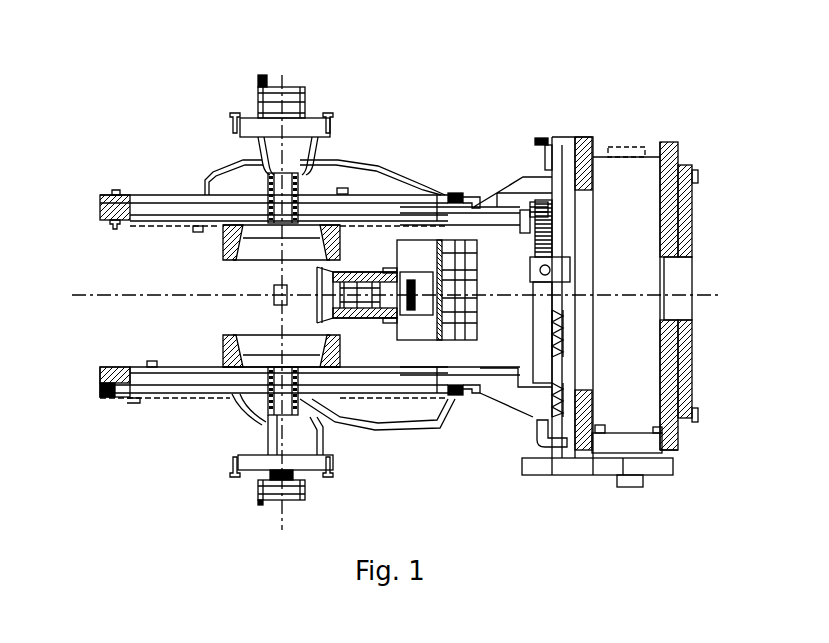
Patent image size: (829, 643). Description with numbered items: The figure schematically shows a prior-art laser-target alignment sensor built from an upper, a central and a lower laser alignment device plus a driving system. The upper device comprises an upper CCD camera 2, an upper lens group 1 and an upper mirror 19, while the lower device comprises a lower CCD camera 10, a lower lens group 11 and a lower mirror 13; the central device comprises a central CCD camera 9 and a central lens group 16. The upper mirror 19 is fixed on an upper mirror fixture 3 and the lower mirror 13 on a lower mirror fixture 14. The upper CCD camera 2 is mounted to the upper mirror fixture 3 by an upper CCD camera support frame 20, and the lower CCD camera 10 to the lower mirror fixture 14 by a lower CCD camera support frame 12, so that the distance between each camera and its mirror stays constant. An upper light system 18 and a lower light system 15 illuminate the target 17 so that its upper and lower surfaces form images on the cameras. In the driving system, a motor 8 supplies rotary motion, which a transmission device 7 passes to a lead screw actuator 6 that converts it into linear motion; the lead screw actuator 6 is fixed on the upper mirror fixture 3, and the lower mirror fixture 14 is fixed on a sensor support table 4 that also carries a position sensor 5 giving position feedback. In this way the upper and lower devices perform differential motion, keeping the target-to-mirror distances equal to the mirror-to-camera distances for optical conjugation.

The upper lens group 1 is at (207, 173).
The upper CCD camera 2 is at (258, 95).
The upper mirror fixture 3 is at (452, 195).
The sensor support table 4 is at (585, 148).
The position sensor 5 is at (545, 230).
The lead screw actuator 6 is at (555, 408).
The transmission device 7 is at (627, 442).
The motor 8 is at (643, 472).
The central CCD camera 9 is at (430, 310).
The lower CCD camera 10 is at (260, 488).
The lower lens group 11 is at (243, 418).
The lower CCD camera support frame 12 is at (237, 420).
The lower mirror 13 is at (190, 378).
The lower mirror fixture 14 is at (100, 387).
The lower light system 15 is at (227, 347).
The central lens group 16 is at (318, 306).
The target 17 is at (272, 296).
The upper light system 18 is at (100, 215).
The upper mirror 19 is at (190, 210).
The upper CCD camera support frame 20 is at (187, 158).